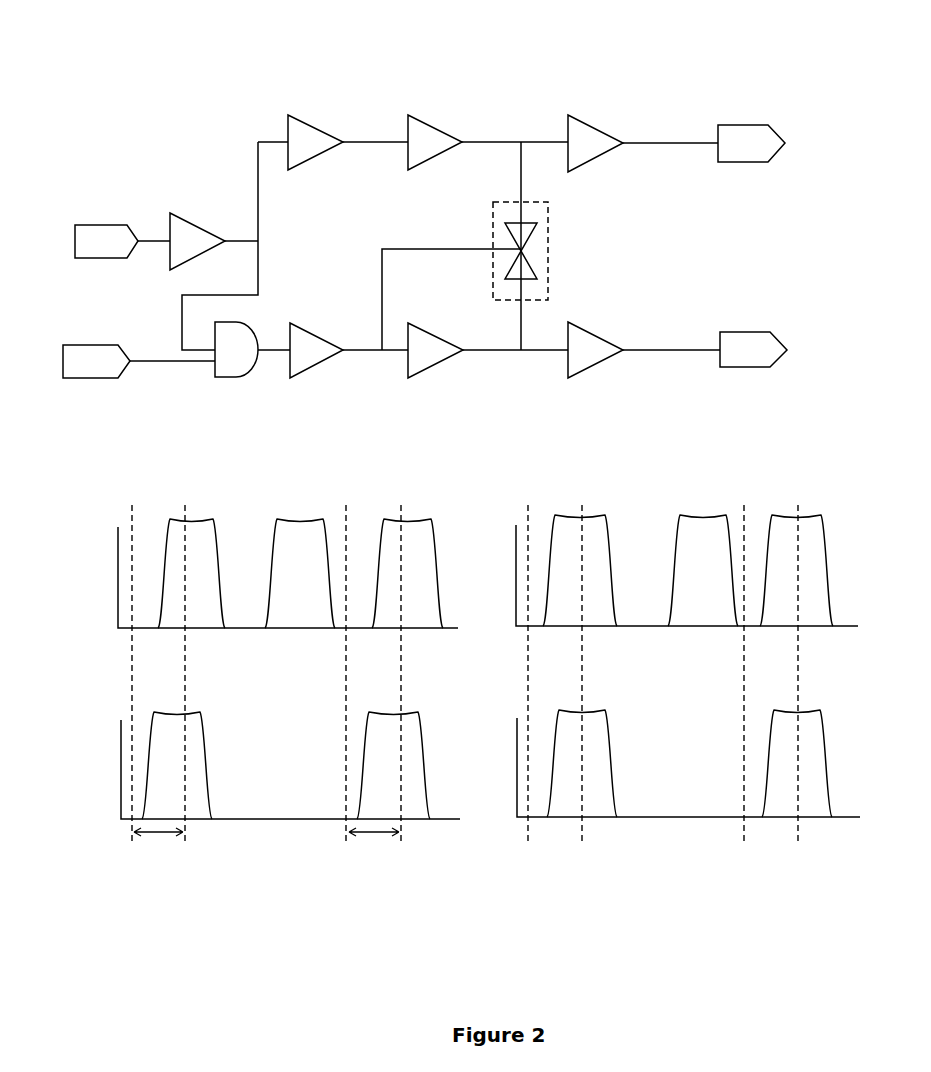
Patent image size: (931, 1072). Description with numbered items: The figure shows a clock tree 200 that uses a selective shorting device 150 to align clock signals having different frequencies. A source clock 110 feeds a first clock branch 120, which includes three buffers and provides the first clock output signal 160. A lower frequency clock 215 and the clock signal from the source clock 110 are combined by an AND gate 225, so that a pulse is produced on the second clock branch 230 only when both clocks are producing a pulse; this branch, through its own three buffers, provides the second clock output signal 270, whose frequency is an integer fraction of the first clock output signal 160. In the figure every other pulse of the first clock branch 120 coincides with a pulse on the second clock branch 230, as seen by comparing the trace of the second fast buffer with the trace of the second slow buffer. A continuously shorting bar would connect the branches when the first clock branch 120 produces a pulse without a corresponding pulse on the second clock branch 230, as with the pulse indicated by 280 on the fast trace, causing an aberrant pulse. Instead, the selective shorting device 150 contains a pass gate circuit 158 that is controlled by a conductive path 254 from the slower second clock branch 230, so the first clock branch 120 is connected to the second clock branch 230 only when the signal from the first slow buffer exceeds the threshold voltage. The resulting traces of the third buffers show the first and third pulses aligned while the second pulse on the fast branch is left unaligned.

The clock tree 200 is at (531, 50).
The source clock 110 is at (73, 259).
The lower frequency clock 215 is at (63, 360).
The AND gate 225 is at (238, 377).
The first clock branch 120 is at (383, 107).
The second clock branch 230 is at (393, 376).
The connection line to switch 254 is at (408, 248).
The selective shorting device 150 is at (493, 227).
The pass gate circuit 158 is at (521, 249).
The first clock output signal 160 is at (742, 162).
The second clock output signal 270 is at (743, 367).
The pulse on trace S2 280 is at (307, 498).